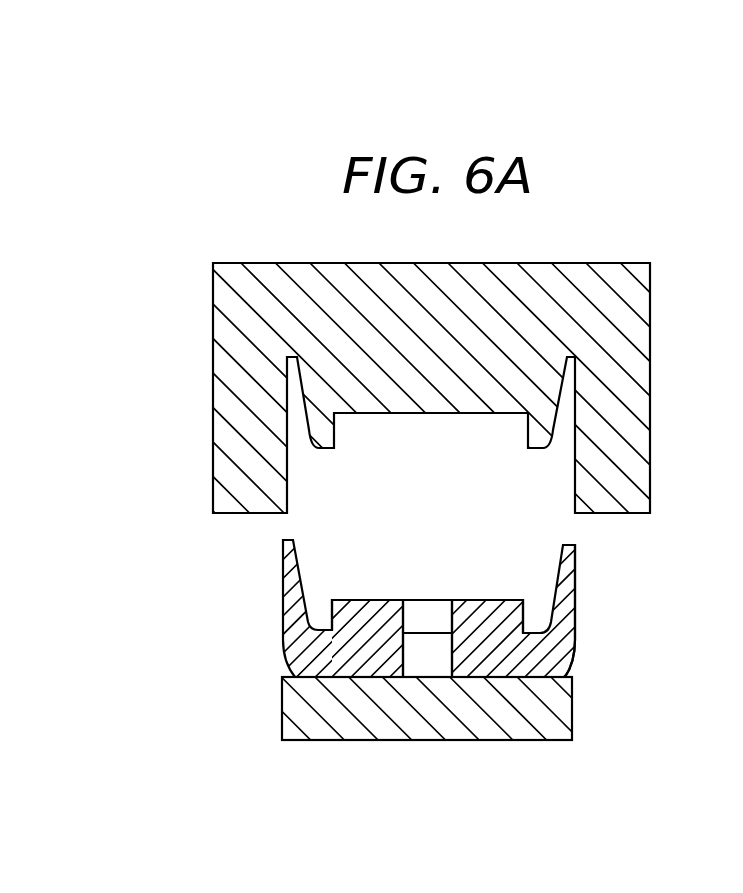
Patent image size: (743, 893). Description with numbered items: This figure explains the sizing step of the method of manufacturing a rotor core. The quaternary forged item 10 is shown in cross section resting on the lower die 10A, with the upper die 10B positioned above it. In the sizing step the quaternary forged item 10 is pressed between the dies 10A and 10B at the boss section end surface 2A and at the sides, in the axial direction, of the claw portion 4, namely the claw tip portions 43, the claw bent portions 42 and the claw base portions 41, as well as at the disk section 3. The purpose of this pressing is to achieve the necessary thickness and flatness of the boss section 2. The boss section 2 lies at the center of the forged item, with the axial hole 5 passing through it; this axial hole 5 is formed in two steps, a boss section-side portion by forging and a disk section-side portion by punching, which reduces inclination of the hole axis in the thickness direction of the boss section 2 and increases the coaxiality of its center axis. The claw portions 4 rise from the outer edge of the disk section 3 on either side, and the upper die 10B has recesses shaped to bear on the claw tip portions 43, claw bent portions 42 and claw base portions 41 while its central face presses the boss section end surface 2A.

The die 10B is at (657, 260).
The die 10A is at (580, 748).
The quaternary forged item 10 is at (434, 659).
The claw portion 4 is at (707, 523).
The claw base portion 41 is at (573, 628).
The claw bent portion 42 is at (573, 590).
The claw tip portion 43 is at (573, 553).
The boss section 2 is at (483, 598).
The boss section end surface 2A is at (501, 598).
The axial hole 5 is at (447, 657).
The disk section 3 is at (532, 673).